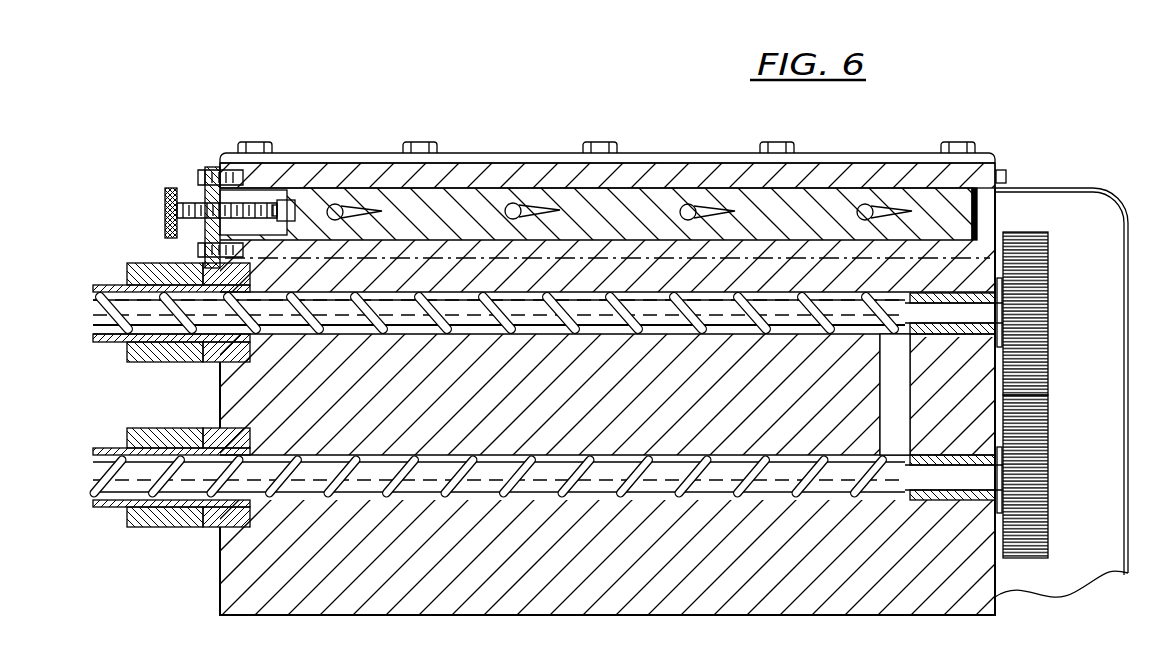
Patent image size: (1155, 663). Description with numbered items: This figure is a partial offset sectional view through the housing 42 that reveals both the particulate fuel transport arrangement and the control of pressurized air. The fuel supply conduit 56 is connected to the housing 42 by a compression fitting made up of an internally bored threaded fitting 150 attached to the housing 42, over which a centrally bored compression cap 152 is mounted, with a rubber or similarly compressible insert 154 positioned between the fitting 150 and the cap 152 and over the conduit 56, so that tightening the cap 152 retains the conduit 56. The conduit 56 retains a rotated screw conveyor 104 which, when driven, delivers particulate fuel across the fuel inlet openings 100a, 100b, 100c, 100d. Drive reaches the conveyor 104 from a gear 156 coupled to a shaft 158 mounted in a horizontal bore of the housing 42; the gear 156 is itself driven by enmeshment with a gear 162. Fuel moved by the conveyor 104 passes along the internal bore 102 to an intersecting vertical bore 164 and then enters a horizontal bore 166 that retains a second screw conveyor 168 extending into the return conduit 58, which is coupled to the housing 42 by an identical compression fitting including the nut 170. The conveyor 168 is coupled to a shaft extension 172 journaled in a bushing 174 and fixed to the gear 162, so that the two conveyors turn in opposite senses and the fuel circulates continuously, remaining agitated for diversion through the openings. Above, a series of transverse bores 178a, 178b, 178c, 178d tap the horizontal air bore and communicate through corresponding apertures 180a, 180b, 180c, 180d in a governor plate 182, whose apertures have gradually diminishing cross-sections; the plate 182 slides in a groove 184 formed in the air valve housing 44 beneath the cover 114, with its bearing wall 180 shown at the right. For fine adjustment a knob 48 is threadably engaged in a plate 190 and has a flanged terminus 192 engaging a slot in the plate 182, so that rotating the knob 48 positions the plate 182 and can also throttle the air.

The housing 42 is at (855, 600).
The air valve housing 44 is at (872, 180).
The knob 48 is at (170, 188).
The fuel supply conduit 56 is at (112, 285).
The return conduit 58 is at (108, 507).
The fuel inlet opening 100a is at (337, 334).
The fuel inlet opening 100b is at (510, 334).
The fuel inlet opening 100c is at (688, 334).
The fuel inlet opening 100d is at (865, 334).
The internal bore 102 is at (578, 334).
The screw conveyor 104 is at (588, 300).
The top cover plate 114 is at (632, 163).
The threaded fitting 150 is at (214, 362).
The compression cap 152 is at (162, 263).
The compressible insert 154 is at (153, 362).
The gear 156 is at (1040, 272).
The shaft 158 is at (932, 300).
The gear 162 is at (1040, 470).
The vertical bore 164 is at (895, 390).
The horizontal bore 166 is at (650, 500).
The screw conveyor 168 is at (625, 462).
The lower pipe coupling nut 170 is at (195, 527).
The shaft extension 172 is at (950, 478).
The bushing 174 is at (958, 500).
The transverse bore 178a is at (338, 204).
The transverse bore 178b is at (513, 203).
The transverse bore 178c is at (690, 204).
The transverse bore 178d is at (862, 204).
The bushing wall 180 is at (970, 334).
The aperture 180a is at (376, 212).
The aperture 180b is at (533, 210).
The aperture 180c is at (712, 212).
The aperture 180d is at (893, 212).
The governor plate 182 is at (447, 205).
The groove 184 is at (270, 198).
The plate 190 is at (212, 167).
The flanged terminus 192 is at (292, 205).